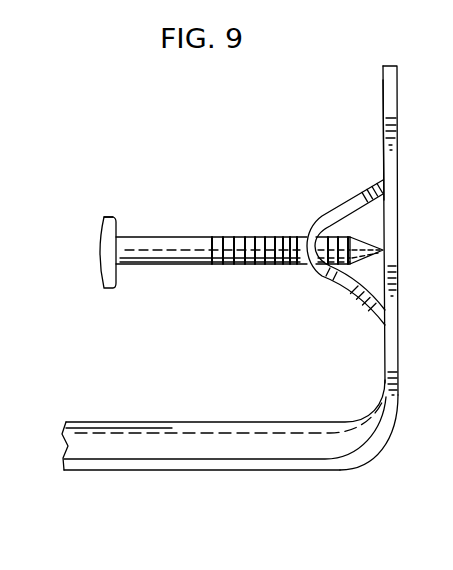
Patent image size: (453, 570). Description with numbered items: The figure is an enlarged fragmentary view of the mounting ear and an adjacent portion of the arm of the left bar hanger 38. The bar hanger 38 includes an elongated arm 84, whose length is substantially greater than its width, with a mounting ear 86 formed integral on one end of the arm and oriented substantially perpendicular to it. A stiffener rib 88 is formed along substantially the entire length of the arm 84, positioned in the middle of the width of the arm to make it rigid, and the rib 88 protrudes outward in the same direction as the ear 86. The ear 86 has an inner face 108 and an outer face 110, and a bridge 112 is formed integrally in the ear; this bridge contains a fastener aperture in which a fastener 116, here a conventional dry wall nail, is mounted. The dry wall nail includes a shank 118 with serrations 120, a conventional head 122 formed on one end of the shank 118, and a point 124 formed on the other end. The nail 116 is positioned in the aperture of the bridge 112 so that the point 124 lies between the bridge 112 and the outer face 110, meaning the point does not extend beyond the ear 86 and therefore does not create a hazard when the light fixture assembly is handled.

The left bar hanger 38 is at (198, 421).
The elongated arm 84 is at (316, 465).
The mounting ear 86 is at (389, 86).
The stiffener rib 88 is at (118, 423).
The inner face 108 is at (383, 101).
The outer face 110 is at (396, 116).
The bridge 112 is at (347, 201).
The fastener 116 is at (103, 269).
The shank 118 is at (177, 246).
The serrations 120 is at (254, 253).
The head 122 is at (103, 224).
The point 124 is at (365, 250).